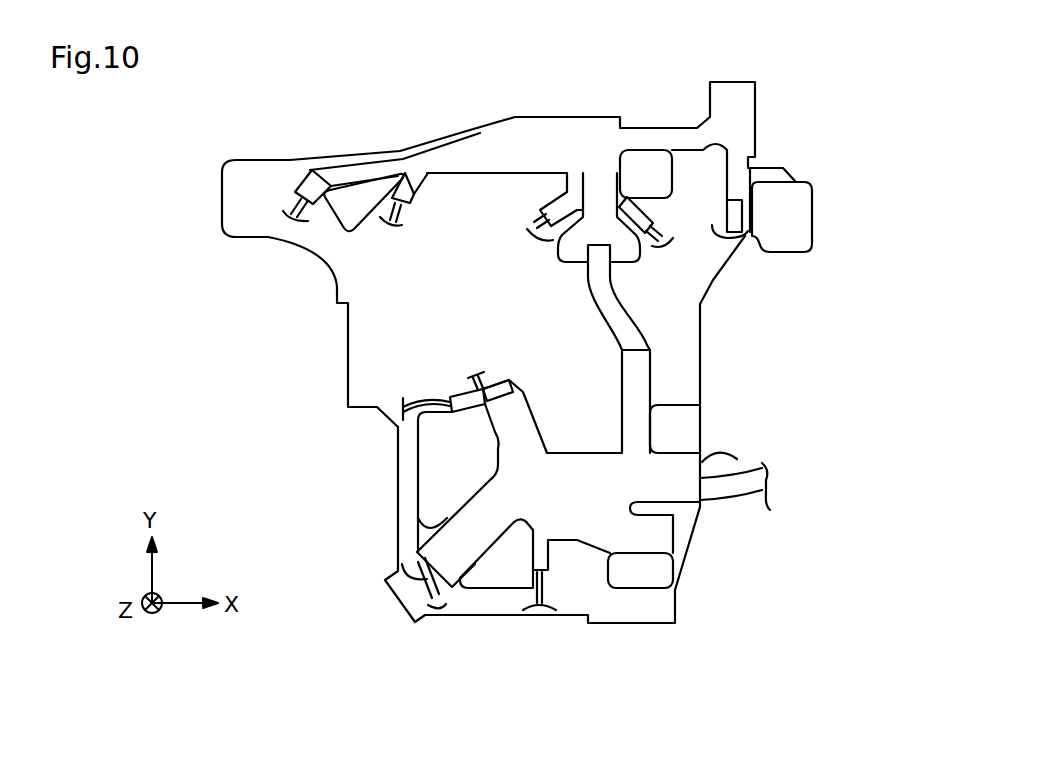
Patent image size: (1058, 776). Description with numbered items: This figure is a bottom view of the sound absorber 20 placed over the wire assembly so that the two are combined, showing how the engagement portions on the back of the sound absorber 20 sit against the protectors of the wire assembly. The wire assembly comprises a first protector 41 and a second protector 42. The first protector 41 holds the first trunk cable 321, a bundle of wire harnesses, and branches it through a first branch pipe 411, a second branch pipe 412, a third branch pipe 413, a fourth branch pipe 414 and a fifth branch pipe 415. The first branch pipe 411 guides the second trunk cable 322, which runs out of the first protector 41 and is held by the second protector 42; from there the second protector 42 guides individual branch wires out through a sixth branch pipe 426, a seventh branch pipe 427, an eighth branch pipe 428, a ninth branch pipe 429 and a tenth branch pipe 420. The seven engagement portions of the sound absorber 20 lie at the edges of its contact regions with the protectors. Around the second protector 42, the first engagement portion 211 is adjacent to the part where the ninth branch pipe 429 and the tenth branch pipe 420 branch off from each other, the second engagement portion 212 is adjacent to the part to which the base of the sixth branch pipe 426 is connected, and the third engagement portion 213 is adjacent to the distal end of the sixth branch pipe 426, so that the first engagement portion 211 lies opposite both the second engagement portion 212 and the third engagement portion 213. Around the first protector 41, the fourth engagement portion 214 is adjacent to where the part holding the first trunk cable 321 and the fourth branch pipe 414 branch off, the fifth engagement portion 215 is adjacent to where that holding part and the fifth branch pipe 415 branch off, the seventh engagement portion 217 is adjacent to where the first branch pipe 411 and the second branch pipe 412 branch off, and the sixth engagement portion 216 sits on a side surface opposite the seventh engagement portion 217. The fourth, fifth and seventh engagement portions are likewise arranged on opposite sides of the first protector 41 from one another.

The sound absorber 20 is at (347, 368).
The first protector 41 is at (445, 513).
The second protector 42 is at (470, 130).
The first engagement portion 211 is at (332, 218).
The second engagement portion 212 is at (676, 172).
The third engagement portion 213 is at (812, 221).
The fourth engagement portion 214 is at (417, 452).
The fifth engagement portion 215 is at (487, 597).
The sixth engagement portion 216 is at (642, 590).
The seventh engagement portion 217 is at (700, 428).
The first trunk cable 321 is at (405, 575).
The second trunk cable 322 is at (590, 280).
The first branch pipe 411 is at (620, 397).
The second branch pipe 412 is at (683, 505).
The third branch pipe 413 is at (507, 380).
The fourth branch pipe 414 is at (457, 390).
The fifth branch pipe 415 is at (565, 563).
The tenth branch pipe 420 is at (335, 167).
The sixth branch pipe 426 is at (693, 123).
The seventh branch pipe 427 is at (647, 208).
The eighth branch pipe 428 is at (548, 200).
The ninth branch pipe 429 is at (415, 193).